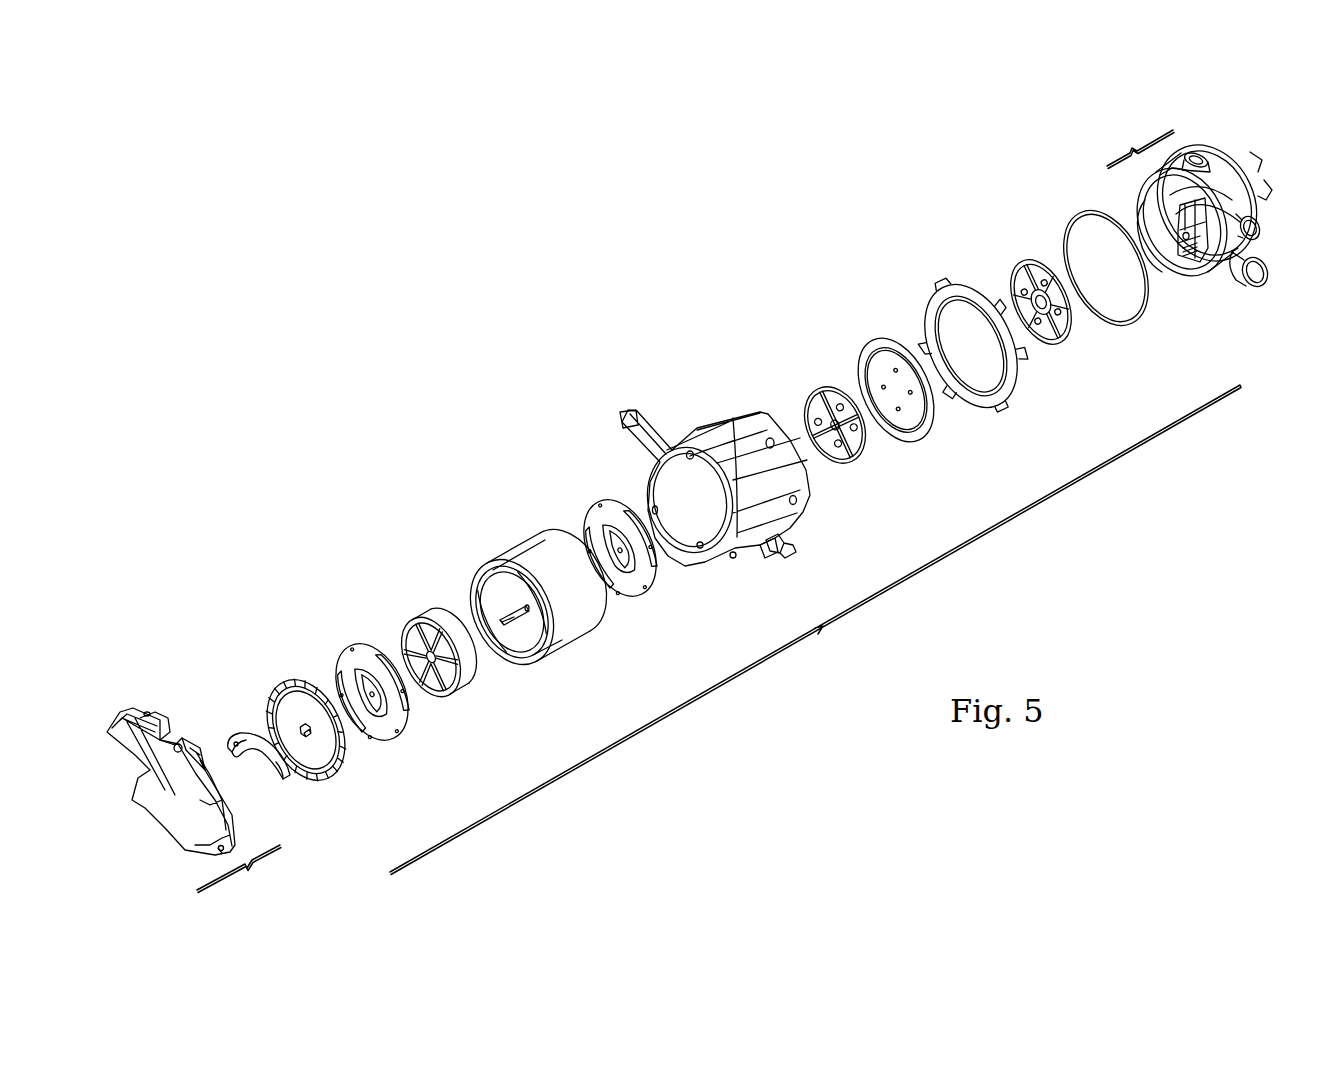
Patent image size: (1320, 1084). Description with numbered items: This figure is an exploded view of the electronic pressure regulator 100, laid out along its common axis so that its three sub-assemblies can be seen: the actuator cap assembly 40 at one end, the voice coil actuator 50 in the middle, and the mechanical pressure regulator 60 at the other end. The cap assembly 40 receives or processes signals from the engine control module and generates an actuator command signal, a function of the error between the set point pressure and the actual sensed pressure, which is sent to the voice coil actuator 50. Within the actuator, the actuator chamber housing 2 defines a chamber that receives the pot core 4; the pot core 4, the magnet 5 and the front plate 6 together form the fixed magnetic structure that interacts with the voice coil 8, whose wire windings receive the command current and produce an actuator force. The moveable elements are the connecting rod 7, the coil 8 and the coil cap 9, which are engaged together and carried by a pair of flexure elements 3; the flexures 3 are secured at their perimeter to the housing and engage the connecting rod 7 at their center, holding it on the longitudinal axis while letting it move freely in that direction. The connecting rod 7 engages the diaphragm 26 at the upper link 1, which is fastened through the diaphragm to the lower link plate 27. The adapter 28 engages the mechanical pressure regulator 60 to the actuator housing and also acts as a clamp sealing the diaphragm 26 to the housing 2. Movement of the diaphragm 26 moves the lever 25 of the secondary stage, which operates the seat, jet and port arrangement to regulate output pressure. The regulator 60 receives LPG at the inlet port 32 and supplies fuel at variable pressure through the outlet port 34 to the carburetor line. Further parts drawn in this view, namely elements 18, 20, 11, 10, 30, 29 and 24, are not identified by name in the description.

The electronic pressure regulator 100 is at (563, 340).
The voice coil actuator 50 is at (815, 630).
The actuator cap assembly 40 is at (239, 874).
The mechanical pressure regulator 60 is at (1140, 142).
The rear housing 18 is at (110, 730).
The mounting flange 20 is at (155, 720).
The curved spacer 11 is at (240, 736).
The encoder disc 10 is at (290, 694).
The flexure elements 3 is at (358, 656).
The coil cap 9 is at (420, 630).
The voice coil 8 is at (452, 630).
The front plate 6 is at (482, 590).
The magnet 5 is at (504, 568).
The pot core 4 is at (530, 556).
The connecting rod 7 is at (532, 634).
The actuator chamber housing 2 is at (704, 438).
The fitting 30 is at (792, 550).
The upper link 1 is at (822, 400).
The diaphragm 26 is at (878, 350).
The adapter 28 is at (950, 292).
The lower link plate 27 is at (1030, 270).
The O-ring seal 29 is at (1086, 218).
The end cap 24 is at (1182, 212).
The inlet port 32 is at (1196, 156).
The lever 25 is at (1188, 250).
The outlet port 34 is at (1254, 288).